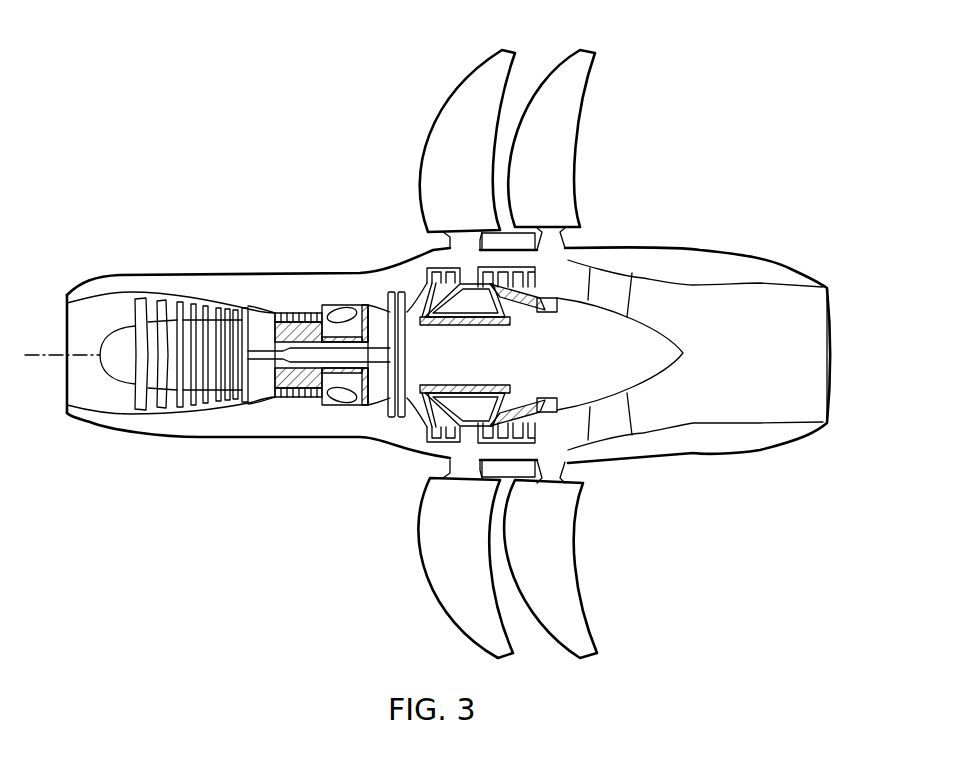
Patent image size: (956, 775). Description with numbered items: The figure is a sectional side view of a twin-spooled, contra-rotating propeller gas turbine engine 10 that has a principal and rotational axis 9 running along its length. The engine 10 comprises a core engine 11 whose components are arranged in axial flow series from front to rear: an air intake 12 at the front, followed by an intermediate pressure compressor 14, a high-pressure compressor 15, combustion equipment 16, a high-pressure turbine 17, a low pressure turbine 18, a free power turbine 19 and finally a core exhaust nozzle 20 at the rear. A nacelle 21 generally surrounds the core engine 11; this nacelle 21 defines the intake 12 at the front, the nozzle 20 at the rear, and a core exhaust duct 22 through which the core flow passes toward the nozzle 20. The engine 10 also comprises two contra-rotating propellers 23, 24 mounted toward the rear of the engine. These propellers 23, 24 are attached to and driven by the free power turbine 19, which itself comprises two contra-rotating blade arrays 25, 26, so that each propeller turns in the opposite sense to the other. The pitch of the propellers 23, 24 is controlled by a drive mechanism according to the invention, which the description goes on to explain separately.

The principal and rotational axis 9 is at (52, 356).
The gas turbine engine 10 is at (165, 147).
The core engine 11 is at (306, 284).
The air intake 12 is at (67, 402).
The intermediate pressure compressor 14 is at (158, 407).
The high-pressure compressor 15 is at (273, 393).
The combustion equipment 16 is at (338, 398).
The high-pressure turbine 17 is at (363, 410).
The low pressure turbine 18 is at (407, 371).
The free power turbine 19 is at (432, 267).
The core exhaust nozzle 20 is at (827, 424).
The nacelle 21 is at (702, 250).
The core exhaust duct 22 is at (753, 394).
The first propeller 23 is at (443, 582).
The second propeller 24 is at (560, 588).
The first contra-rotating blade array 25 is at (424, 255).
The second contra-rotating blade array 26 is at (546, 311).